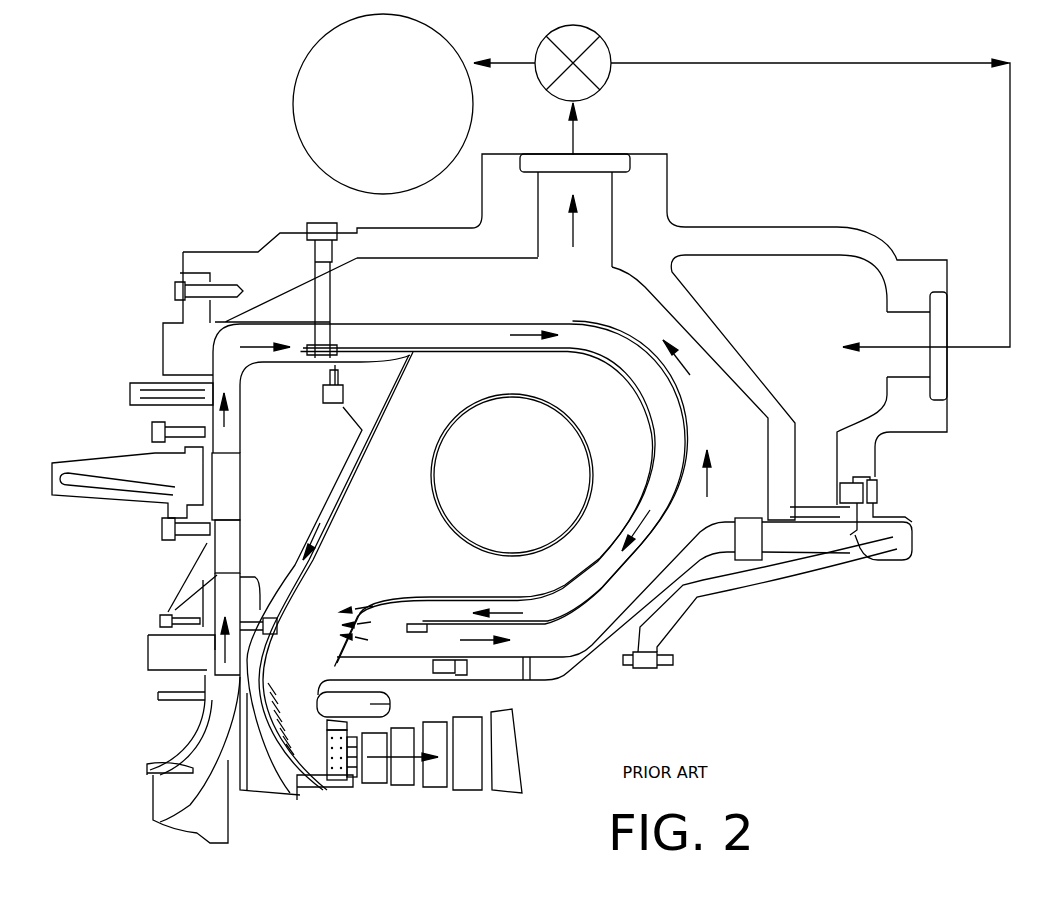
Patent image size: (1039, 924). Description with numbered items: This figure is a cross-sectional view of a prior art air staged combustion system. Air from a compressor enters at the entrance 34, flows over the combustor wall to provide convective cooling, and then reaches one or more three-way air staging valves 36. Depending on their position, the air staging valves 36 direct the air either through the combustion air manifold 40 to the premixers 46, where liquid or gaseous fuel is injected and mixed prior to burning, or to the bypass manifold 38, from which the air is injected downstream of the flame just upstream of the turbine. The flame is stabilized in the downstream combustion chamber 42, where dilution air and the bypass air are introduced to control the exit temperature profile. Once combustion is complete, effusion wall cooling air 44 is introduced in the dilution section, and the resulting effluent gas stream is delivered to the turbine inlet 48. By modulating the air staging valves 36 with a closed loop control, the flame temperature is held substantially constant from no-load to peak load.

The entrance 34 is at (120, 800).
The three-way air staging valve 36 is at (607, 38).
The bypass manifold 38 is at (775, 330).
The combustion air manifold 40 is at (495, 458).
The combustion chamber 42 is at (345, 470).
The effusion wall cooling air 44 is at (368, 592).
The premixers 46 is at (485, 487).
The turbine inlet 48 is at (313, 757).